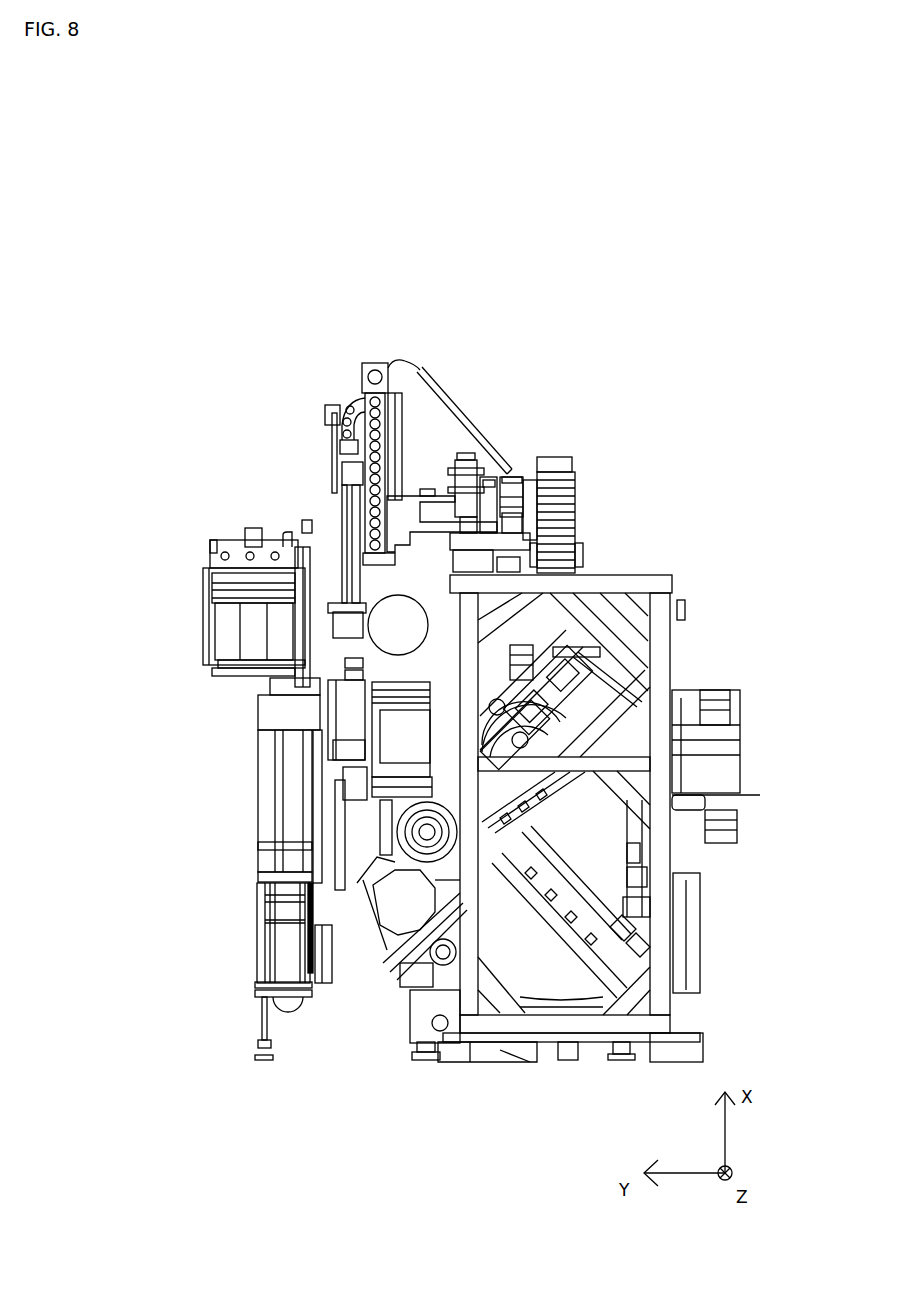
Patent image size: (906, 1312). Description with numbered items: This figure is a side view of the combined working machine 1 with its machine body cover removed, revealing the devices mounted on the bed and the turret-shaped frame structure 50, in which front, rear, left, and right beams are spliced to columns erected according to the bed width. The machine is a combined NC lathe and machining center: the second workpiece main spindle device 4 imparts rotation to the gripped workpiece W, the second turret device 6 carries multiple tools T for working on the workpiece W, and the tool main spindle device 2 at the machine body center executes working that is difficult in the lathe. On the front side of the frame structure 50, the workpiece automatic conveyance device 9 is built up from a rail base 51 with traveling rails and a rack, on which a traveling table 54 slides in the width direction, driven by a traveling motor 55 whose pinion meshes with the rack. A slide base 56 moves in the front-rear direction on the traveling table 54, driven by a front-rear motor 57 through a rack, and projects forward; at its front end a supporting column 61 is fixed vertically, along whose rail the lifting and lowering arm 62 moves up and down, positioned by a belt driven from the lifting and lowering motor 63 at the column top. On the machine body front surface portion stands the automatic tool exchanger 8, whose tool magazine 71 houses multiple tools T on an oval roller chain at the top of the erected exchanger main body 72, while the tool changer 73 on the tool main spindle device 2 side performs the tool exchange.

The combined working machine 1 is at (513, 227).
The tool main spindle device 2 is at (385, 797).
The second workpiece main spindle device 4 is at (377, 972).
The second turret device 6 is at (546, 627).
The automatic tool exchanger 8 is at (235, 533).
The workpiece automatic conveyance device 9 is at (340, 393).
The frame structure 50 is at (663, 858).
The rail base 51 is at (462, 596).
The traveling table 54 is at (577, 527).
The traveling motor 55 is at (510, 475).
The slide base 56 is at (432, 510).
The front-rear motor 57 is at (466, 460).
The supporting column 61 is at (415, 385).
The lifting and lowering arm 62 is at (340, 507).
The lifting and lowering motor 63 is at (373, 363).
The tool magazine 71 is at (202, 595).
The exchanger main body 72 is at (267, 778).
The tool changer 73 is at (343, 720).
The tool T is at (225, 638).
The workpiece W is at (399, 686).